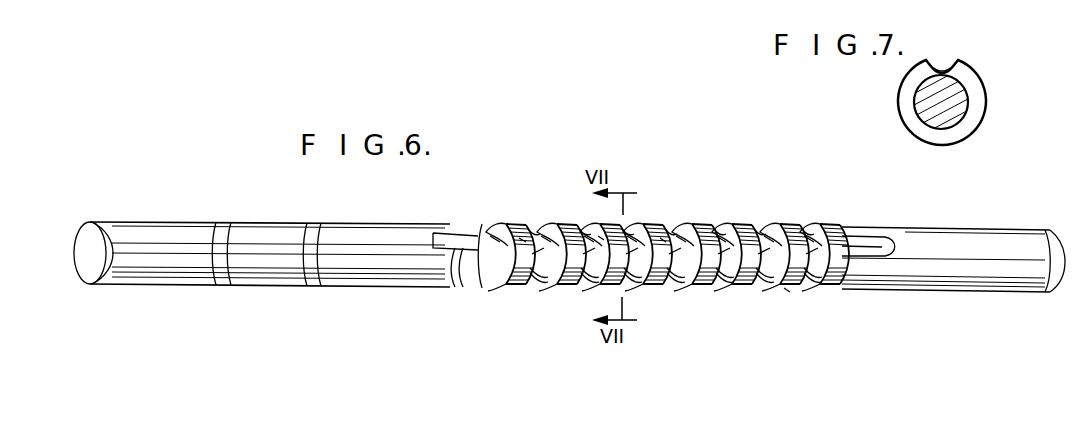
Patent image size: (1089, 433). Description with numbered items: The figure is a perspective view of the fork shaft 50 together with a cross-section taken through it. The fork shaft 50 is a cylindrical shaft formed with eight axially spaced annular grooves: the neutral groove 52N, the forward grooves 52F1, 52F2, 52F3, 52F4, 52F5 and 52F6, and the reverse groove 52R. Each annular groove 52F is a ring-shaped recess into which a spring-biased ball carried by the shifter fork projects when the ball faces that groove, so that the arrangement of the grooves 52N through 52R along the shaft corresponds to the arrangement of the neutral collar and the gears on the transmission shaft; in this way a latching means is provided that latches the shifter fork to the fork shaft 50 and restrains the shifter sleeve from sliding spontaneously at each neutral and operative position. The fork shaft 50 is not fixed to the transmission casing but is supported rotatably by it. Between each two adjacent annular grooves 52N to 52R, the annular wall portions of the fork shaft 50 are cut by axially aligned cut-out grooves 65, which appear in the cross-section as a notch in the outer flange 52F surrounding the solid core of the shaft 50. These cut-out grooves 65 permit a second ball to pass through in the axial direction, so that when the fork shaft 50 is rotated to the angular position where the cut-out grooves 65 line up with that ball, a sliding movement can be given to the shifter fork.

In FIG. 6, the fork shaft 50 is at (392, 290).
In FIG. 7, the fork shaft 50 is at (942, 105).
In FIG. 7, the annular groove 52F is at (979, 101).
In FIG. 6, the first forward annular groove 52F1 is at (822, 291).
In FIG. 6, the second forward annular groove 52F2 is at (691, 291).
In FIG. 6, the third forward annular groove 52F3 is at (641, 291).
In FIG. 6, the fourth forward annular groove 52F4 is at (599, 289).
In FIG. 6, the fifth forward annular groove 52F5 is at (554, 289).
In FIG. 6, the sixth forward annular groove 52F6 is at (494, 284).
In FIG. 6, the neutral annular groove 52N is at (719, 258).
In FIG. 6, the reverse annular groove 52R is at (763, 262).
In FIG. 6, the cut-out groove 65 is at (600, 238).
In FIG. 7, the cut-out groove 65 is at (948, 70).